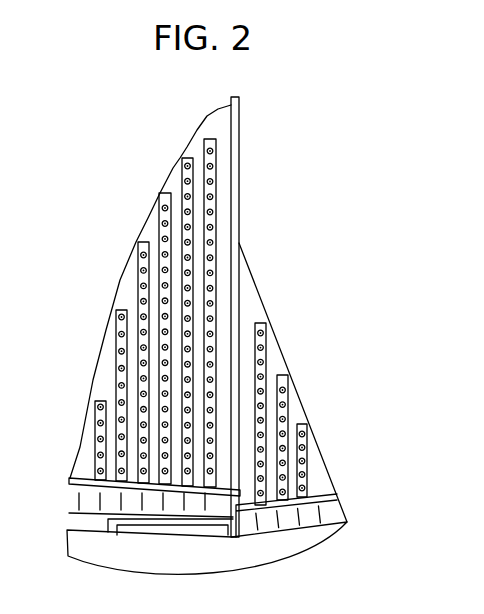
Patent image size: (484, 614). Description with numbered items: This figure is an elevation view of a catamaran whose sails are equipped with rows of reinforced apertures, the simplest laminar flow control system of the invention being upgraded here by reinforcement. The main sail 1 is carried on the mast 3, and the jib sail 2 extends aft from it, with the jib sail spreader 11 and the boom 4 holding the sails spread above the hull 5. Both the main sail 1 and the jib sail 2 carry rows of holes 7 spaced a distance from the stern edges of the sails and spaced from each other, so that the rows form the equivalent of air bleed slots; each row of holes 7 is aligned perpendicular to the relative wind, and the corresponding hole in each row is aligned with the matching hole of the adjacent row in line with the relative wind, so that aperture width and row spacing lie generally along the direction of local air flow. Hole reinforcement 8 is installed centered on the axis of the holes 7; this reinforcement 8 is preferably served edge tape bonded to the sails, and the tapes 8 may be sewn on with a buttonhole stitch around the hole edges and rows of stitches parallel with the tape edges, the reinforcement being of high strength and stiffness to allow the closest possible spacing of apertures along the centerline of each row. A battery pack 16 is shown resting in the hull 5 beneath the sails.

The main sail 1 is at (187, 147).
The jib sail 2 is at (255, 283).
The mast 3 is at (239, 163).
The boom 4 is at (80, 477).
The hull 5 is at (330, 549).
The holes 7 is at (141, 298).
The hole reinforcement 8 is at (135, 244).
The jib sail spreader 11 is at (331, 480).
The battery pack 16 is at (107, 523).